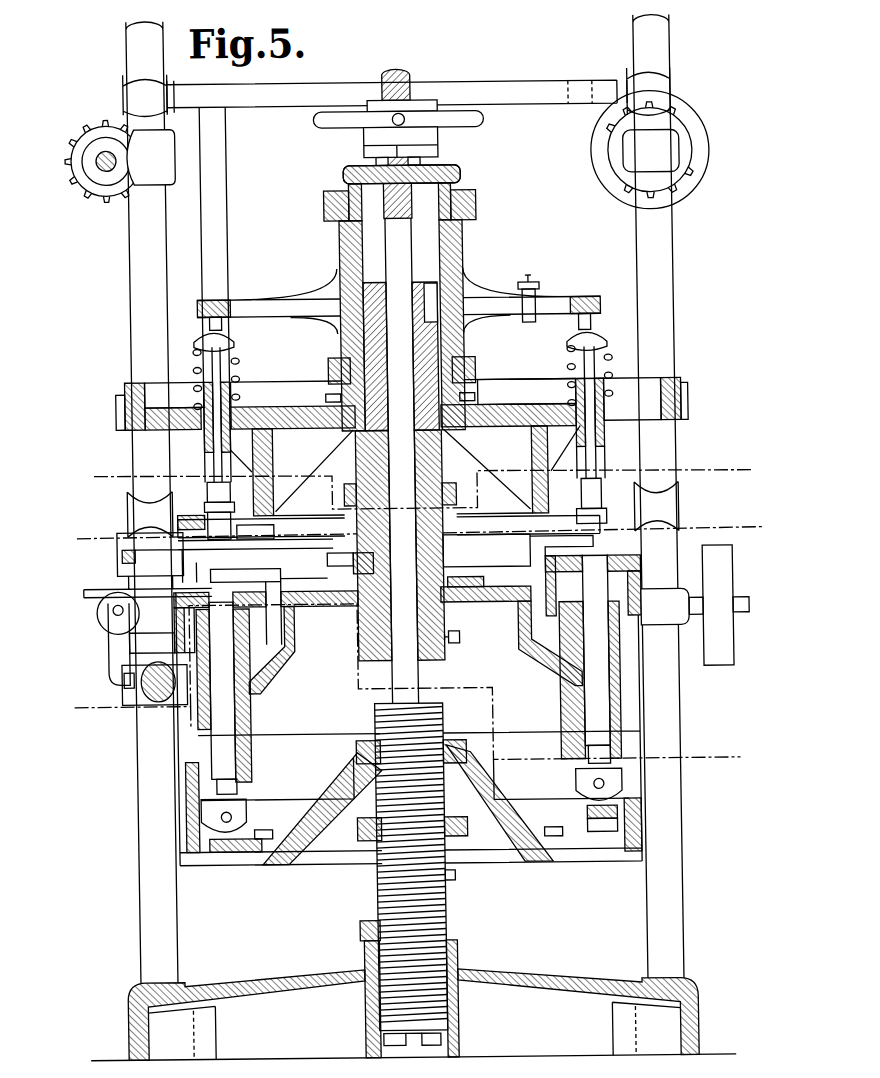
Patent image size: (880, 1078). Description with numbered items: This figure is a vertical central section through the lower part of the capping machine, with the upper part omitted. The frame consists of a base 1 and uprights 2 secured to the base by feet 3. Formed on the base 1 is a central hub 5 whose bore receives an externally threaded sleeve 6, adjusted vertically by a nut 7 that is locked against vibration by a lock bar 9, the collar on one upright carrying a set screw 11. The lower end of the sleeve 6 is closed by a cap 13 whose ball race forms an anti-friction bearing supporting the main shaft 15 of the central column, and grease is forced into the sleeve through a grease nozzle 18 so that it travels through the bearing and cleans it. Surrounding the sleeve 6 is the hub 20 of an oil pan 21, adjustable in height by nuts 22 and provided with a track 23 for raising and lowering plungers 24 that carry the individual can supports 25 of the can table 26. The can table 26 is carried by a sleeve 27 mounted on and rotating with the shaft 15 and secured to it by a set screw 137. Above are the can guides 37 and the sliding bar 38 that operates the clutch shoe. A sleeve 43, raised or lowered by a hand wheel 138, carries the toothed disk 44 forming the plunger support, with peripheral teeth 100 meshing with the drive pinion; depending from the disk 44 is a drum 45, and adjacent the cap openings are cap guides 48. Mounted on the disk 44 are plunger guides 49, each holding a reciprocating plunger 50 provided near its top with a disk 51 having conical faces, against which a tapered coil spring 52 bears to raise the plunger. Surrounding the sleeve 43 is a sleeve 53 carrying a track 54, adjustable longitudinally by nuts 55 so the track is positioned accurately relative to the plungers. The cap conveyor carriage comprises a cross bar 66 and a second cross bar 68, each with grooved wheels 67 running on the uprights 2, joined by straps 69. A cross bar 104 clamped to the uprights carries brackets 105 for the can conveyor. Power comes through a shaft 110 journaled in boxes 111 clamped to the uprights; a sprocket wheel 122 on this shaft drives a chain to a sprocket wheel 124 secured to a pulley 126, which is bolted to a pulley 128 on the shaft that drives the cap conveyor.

The base 1 is at (318, 972).
The uprights 2 is at (405, 498).
The feet 3 is at (120, 1018).
The central hub 5 is at (359, 1024).
The externally threaded sleeve 6 is at (374, 884).
The nut 7 is at (359, 939).
The lock bar 9 is at (425, 483).
The set screw 11 is at (422, 536).
The cap 13 is at (465, 1022).
The main shaft 15 is at (413, 675).
The grease nozzle 18 is at (450, 877).
The hub 20 is at (470, 770).
The oil pan 21 is at (334, 775).
The nuts 22 is at (356, 743).
The track 23 is at (597, 822).
The plungers 24 is at (238, 733).
The can supports 25 is at (278, 656).
The can table 26 is at (305, 592).
The sleeve 27 is at (434, 468).
The can guides 37 is at (267, 571).
The sliding bar 38 is at (123, 549).
The sleeve 43 is at (356, 346).
The toothed disk 44 is at (300, 413).
The drum 45 is at (405, 468).
The cap guides 48 is at (246, 500).
The plunger guides 49 is at (203, 395).
The plunger 50 is at (591, 462).
The disk 51 is at (610, 349).
The tapered coil spring 52 is at (576, 371).
The sleeve 53 is at (342, 242).
The track 54 is at (222, 296).
The nuts 55 is at (333, 214).
The cross bar 66 is at (518, 550).
The grooved wheels 67 is at (149, 94).
The second cross bar 68 is at (547, 89).
The straps 69 is at (224, 189).
The teeth 100 is at (128, 415).
The cross bar 104 is at (155, 697).
The brackets 105 is at (115, 638).
The shaft 110 is at (99, 154).
The boxes 111 is at (151, 158).
The sprocket wheel 122 is at (113, 185).
The sprocket wheel 124 is at (689, 148).
The pulley 126 is at (709, 166).
The pulley 128 is at (724, 585).
The set screw 137 is at (459, 636).
The hand wheel 138 is at (471, 122).